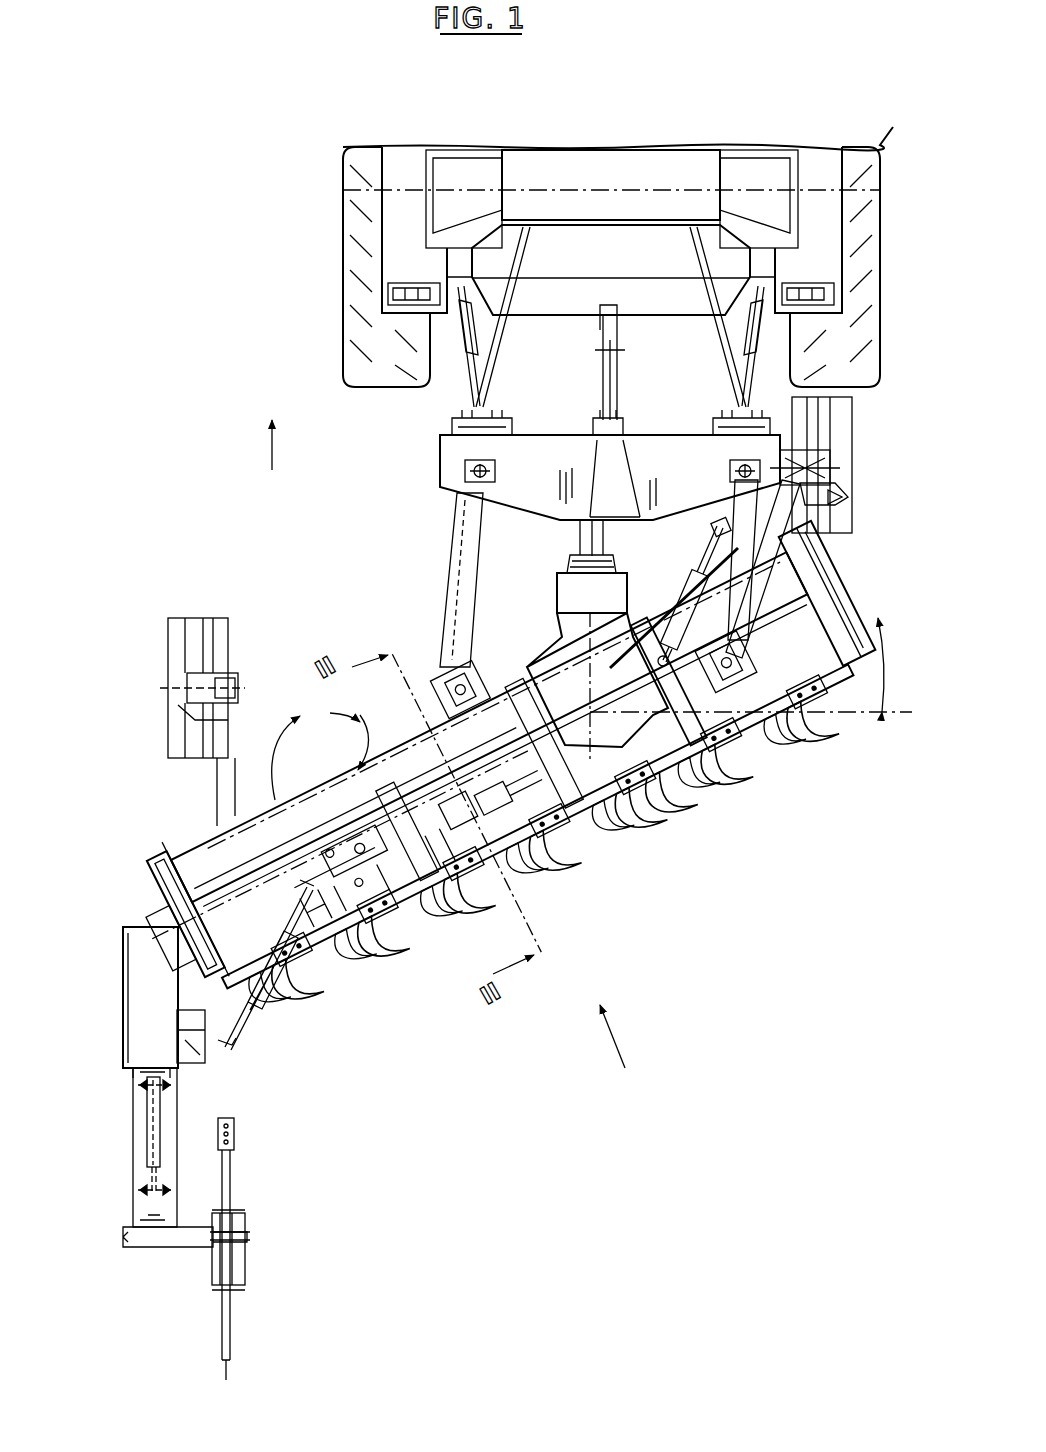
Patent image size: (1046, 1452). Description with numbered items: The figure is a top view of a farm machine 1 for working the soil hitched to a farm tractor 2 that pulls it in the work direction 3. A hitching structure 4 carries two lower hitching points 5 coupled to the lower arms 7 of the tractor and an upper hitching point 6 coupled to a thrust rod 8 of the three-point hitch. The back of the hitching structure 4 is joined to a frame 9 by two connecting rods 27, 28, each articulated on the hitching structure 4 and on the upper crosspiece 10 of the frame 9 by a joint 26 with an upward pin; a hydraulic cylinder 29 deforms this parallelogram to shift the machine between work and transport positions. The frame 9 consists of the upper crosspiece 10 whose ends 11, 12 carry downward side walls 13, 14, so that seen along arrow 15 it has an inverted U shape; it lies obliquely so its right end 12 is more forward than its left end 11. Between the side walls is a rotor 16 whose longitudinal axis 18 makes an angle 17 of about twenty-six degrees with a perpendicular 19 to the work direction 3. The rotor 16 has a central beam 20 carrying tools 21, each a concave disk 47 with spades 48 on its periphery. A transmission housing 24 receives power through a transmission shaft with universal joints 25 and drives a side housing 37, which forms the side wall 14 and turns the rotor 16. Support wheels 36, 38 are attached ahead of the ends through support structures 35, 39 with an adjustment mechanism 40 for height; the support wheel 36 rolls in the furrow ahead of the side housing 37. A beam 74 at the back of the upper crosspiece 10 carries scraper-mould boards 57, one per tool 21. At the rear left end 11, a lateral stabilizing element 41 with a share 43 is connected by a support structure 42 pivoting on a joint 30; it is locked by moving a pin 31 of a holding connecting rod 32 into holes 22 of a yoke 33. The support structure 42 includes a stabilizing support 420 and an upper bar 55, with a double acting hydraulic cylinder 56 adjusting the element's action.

The farm machine 1 is at (600, 822).
The farm tractor 2 is at (398, 232).
The work direction 3 is at (266, 447).
The hitching structure 4 is at (442, 463).
The lower hitching points 5 is at (450, 425).
The upper hitching point 6 is at (632, 418).
The lower arms 7 is at (474, 378).
The thrust rod 8 is at (604, 376).
The frame 9 is at (517, 668).
The upper crosspiece 10 is at (491, 790).
The left end 11 is at (160, 838).
The right end 12 is at (842, 552).
The side wall 13 is at (158, 880).
The side wall 14 is at (848, 598).
The arrow 15 is at (612, 1078).
The rotor 16 is at (453, 829).
The angle 17 is at (880, 650).
The longitudinal axis 18 is at (358, 842).
The perpendicular 19 is at (872, 712).
The central beam 20 is at (514, 790).
The tools 21 is at (320, 750).
The holes 22 is at (304, 846).
The transmission housing 24 is at (580, 700).
The transmission shaft with universal joints 25 is at (606, 536).
The joint 26 is at (486, 470).
The connecting rod 27 is at (746, 515).
The connecting rod 28 is at (460, 528).
The hydraulic cylinder 29 is at (690, 610).
The joint 30 is at (156, 917).
The pin 31 is at (330, 876).
The holding connecting rod 32 is at (256, 986).
The yoke 33 is at (348, 858).
The support structure 35 is at (786, 478).
The support wheel 36 is at (843, 434).
The side housing 37 is at (850, 520).
The support wheel 38 is at (206, 626).
The support structure 39 is at (224, 795).
The adjustment mechanism 40 is at (822, 465).
The lateral stabilizing element 41 is at (176, 1156).
The support structure 42 is at (200, 1078).
The share 43 is at (234, 1150).
The concave disk 47 is at (428, 882).
The spades 48 is at (584, 824).
The upper bar 55 is at (140, 1215).
The double acting hydraulic cylinder 56 is at (148, 1120).
The scraper-mould boards 57 is at (762, 762).
The beam 74 is at (692, 764).
The stabilizing support 420 is at (136, 995).